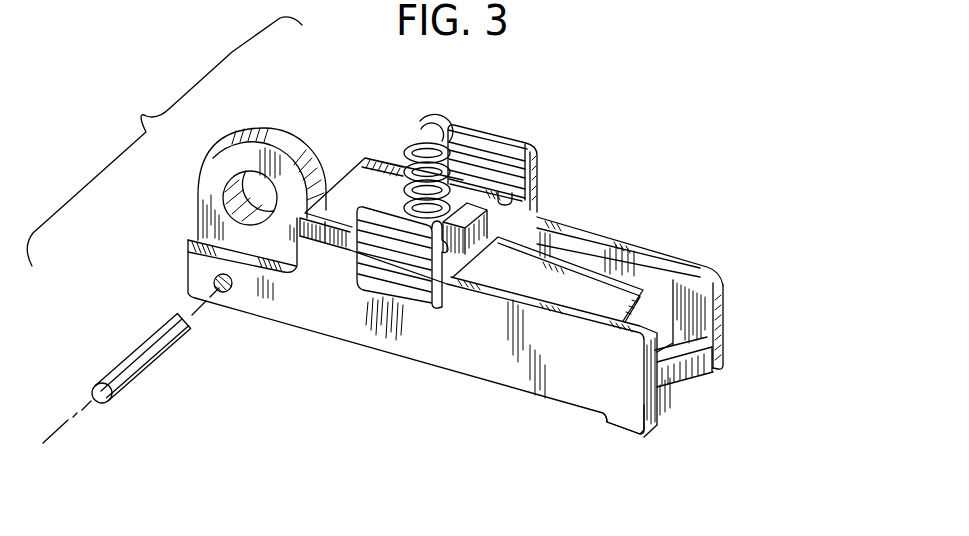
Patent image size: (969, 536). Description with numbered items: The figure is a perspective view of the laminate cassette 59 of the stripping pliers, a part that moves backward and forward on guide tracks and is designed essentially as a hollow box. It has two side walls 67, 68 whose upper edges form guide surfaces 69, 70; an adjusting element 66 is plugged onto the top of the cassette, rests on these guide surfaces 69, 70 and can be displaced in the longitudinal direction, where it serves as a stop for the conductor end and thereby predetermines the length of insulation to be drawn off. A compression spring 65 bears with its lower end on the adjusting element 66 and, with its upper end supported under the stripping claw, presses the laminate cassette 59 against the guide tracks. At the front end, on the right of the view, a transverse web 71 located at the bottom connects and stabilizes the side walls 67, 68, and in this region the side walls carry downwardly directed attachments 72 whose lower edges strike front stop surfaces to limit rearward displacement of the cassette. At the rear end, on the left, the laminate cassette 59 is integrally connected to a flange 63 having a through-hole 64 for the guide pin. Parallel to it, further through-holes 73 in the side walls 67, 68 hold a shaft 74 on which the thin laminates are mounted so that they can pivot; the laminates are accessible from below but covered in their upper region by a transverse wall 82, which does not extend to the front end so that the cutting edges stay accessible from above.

The laminate cassette 59 is at (578, 184).
The flange 63 is at (225, 161).
The through-hole 64 is at (263, 192).
The compression spring 65 is at (430, 124).
The adjusting element 66 is at (524, 140).
The side wall 67 is at (515, 368).
The side wall 68 is at (702, 312).
The guide surface 69 is at (548, 307).
The guide surface 70 is at (670, 260).
The transverse web 71 is at (672, 393).
The attachment 72 is at (630, 427).
The through-hole 73 is at (214, 280).
The shaft 74 is at (160, 340).
The transverse wall 82 is at (502, 282).